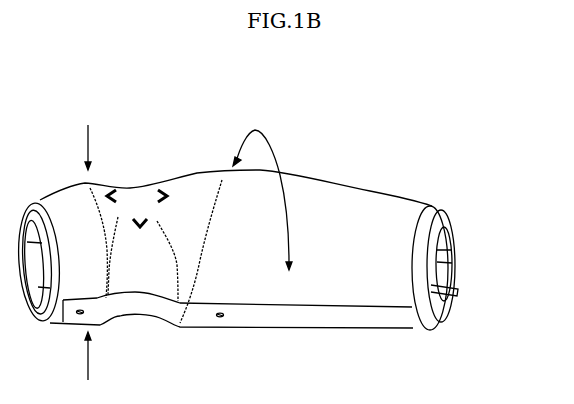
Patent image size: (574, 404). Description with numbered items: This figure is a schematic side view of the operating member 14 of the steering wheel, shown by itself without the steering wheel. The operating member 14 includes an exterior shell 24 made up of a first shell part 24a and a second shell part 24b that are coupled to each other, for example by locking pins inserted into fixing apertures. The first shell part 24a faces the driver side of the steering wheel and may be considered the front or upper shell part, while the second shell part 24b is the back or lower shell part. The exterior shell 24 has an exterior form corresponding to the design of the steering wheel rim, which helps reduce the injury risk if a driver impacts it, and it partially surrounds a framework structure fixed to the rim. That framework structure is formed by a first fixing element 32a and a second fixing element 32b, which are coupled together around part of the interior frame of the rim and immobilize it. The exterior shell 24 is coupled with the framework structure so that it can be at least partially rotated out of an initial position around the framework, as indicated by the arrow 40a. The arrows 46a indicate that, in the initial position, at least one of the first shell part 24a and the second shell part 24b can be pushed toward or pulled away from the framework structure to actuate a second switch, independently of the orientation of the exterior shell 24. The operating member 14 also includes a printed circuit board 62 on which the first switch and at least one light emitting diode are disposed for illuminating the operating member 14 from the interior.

The operating member 14 is at (440, 161).
The exterior shell 24 is at (353, 300).
The first shell part 24a is at (202, 198).
The second shell part 24b is at (268, 313).
The first fixing element 32a is at (448, 223).
The second fixing element 32b is at (448, 318).
The arrow 40a is at (278, 164).
The arrows 46a is at (88, 142).
The printed circuit board 62 is at (458, 291).